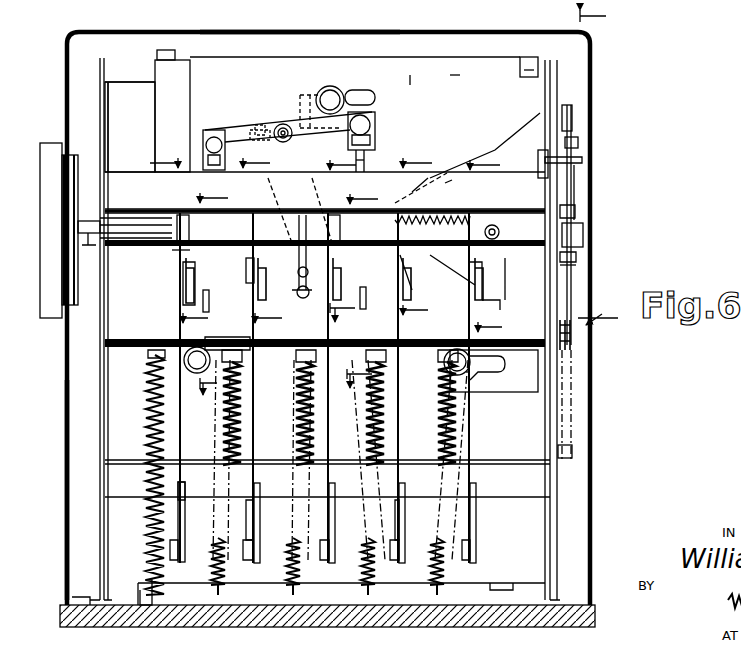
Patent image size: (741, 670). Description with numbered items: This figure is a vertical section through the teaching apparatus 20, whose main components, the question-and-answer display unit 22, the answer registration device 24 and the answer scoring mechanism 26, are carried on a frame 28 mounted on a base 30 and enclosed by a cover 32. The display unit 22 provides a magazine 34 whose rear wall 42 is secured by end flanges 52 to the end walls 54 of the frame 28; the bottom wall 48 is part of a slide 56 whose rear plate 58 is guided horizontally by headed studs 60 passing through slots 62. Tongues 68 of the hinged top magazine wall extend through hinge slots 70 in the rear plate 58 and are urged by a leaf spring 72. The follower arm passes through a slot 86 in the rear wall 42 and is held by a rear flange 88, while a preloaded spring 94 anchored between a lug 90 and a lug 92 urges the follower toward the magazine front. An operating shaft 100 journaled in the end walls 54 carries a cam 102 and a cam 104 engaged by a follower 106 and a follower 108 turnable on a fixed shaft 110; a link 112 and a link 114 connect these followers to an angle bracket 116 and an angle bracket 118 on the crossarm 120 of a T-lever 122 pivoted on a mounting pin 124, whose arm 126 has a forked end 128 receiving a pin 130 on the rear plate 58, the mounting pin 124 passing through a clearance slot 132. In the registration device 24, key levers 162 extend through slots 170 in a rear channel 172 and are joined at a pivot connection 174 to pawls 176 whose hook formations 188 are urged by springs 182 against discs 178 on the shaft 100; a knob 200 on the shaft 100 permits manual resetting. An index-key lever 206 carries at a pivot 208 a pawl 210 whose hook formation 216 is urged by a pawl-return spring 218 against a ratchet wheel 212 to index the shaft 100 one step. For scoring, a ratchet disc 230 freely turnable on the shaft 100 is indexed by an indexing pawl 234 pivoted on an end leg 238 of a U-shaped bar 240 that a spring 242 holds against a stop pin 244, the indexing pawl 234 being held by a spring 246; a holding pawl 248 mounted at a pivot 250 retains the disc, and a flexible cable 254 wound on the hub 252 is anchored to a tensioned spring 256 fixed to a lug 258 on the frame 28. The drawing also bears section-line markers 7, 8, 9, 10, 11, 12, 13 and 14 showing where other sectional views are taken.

The section line 7 is at (492, 240).
The section line 8 is at (417, 239).
The section line 9 is at (337, 244).
The section line 10 is at (262, 229).
The section line 11 is at (180, 230).
The section line 12 is at (219, 302).
The section line 13 is at (368, 303).
The section line 14 is at (605, 166).
The teaching apparatus 20 is at (606, 97).
The question-and-answer display unit 22 is at (246, 56).
The answer registration device 24 is at (338, 574).
The answer scoring mechanism 26 is at (584, 189).
The frame 28 is at (97, 430).
The base 30 is at (192, 618).
The cover 32 is at (326, 31).
The magazine 34 is at (115, 80).
The rear wall 42 is at (135, 92).
The bottom wall 48 is at (502, 393).
The end flanges 52 is at (108, 160).
The end walls 54 is at (100, 100).
The slide 56 is at (453, 73).
The rear plate 58 is at (408, 78).
The headed studs 60 is at (333, 94).
The slots 62 is at (372, 99).
The tongues 68 is at (167, 50).
The hinge slots 70 is at (506, 68).
The leaf spring 72 is at (185, 88).
The slot 86 is at (482, 292).
The rear flange 88 is at (482, 275).
The lug 90 is at (402, 203).
The lug 92 is at (520, 222).
The preloaded spring 94 is at (472, 215).
The operating shaft 100 is at (132, 228).
The cam 102 is at (213, 236).
The cam 104 is at (357, 238).
The follower 106 is at (209, 311).
The follower 108 is at (366, 312).
The fixed shaft 110 is at (141, 348).
The link 112 is at (205, 173).
The link 114 is at (364, 168).
The angle bracket 116 is at (212, 130).
The angle bracket 118 is at (371, 125).
The crossarm 120 is at (250, 128).
The T-lever 122 is at (268, 118).
The mounting pin 124 is at (284, 124).
The arm 126 is at (255, 272).
The forked end 128 is at (302, 298).
The pin 130 is at (303, 262).
The clearance slot 132 is at (312, 100).
The levers 162 is at (327, 517).
The slots 170 is at (185, 516).
The rear channel 172 is at (520, 560).
The pivot connection 174 is at (252, 563).
The pawl 176 is at (236, 444).
The disc 178 is at (494, 302).
The spring 182 is at (212, 565).
The hook formation 188 is at (242, 280).
The knob 200 is at (42, 146).
The lever 206 is at (185, 496).
The pivot 208 is at (150, 554).
The pawl 210 is at (181, 433).
The ratchet wheel 212 is at (180, 252).
The hook formation 216 is at (183, 270).
The pawl-return spring 218 is at (148, 432).
The ratchet disc 230 is at (576, 200).
The indexing pawl 234 is at (582, 160).
The end legs 238 is at (575, 213).
The U-shaped bar 240 is at (447, 181).
The spring 242 is at (100, 258).
The stop pin 244 is at (577, 258).
The spring 246 is at (540, 173).
The holding pawl 248 is at (578, 142).
The pivot 250 is at (573, 118).
The hub 252 is at (584, 236).
The flexible cable 254 is at (577, 270).
The tensioned spring 256 is at (571, 353).
The lug 258 is at (573, 452).